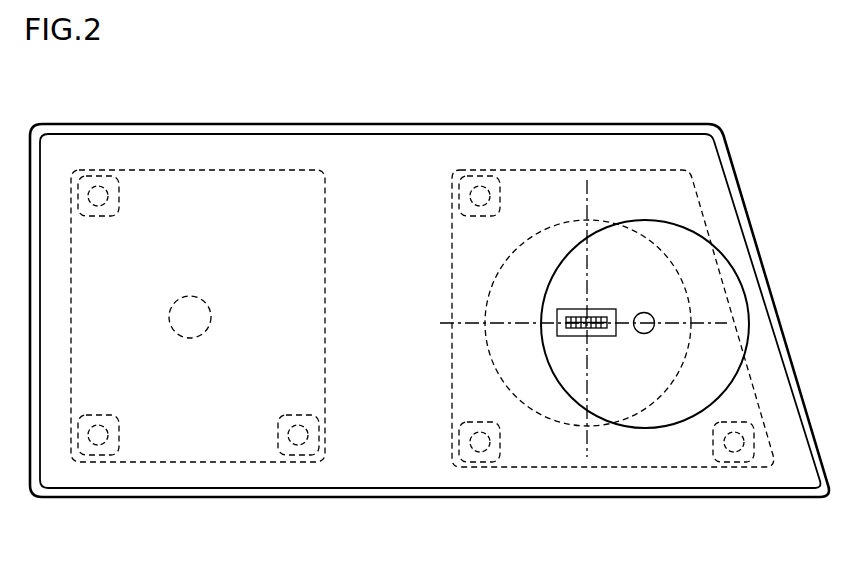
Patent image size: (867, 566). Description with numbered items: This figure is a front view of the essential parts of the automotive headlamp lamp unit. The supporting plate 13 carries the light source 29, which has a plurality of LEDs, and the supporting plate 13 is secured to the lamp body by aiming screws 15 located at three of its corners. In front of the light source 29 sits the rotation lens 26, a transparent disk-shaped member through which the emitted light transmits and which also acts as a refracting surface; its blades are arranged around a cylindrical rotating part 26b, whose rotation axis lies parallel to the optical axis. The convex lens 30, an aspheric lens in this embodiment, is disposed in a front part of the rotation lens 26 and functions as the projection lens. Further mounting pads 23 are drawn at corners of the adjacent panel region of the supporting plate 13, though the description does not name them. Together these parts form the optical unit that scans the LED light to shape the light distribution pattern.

The supporting plate 13 is at (698, 199).
The aiming screws 15 is at (479, 186).
The mounting pads 23 is at (98, 186).
The rotation lens 26 is at (724, 258).
The cylindrical rotating part 26b is at (652, 313).
The light source 29 is at (604, 304).
The convex lens 30 is at (553, 222).